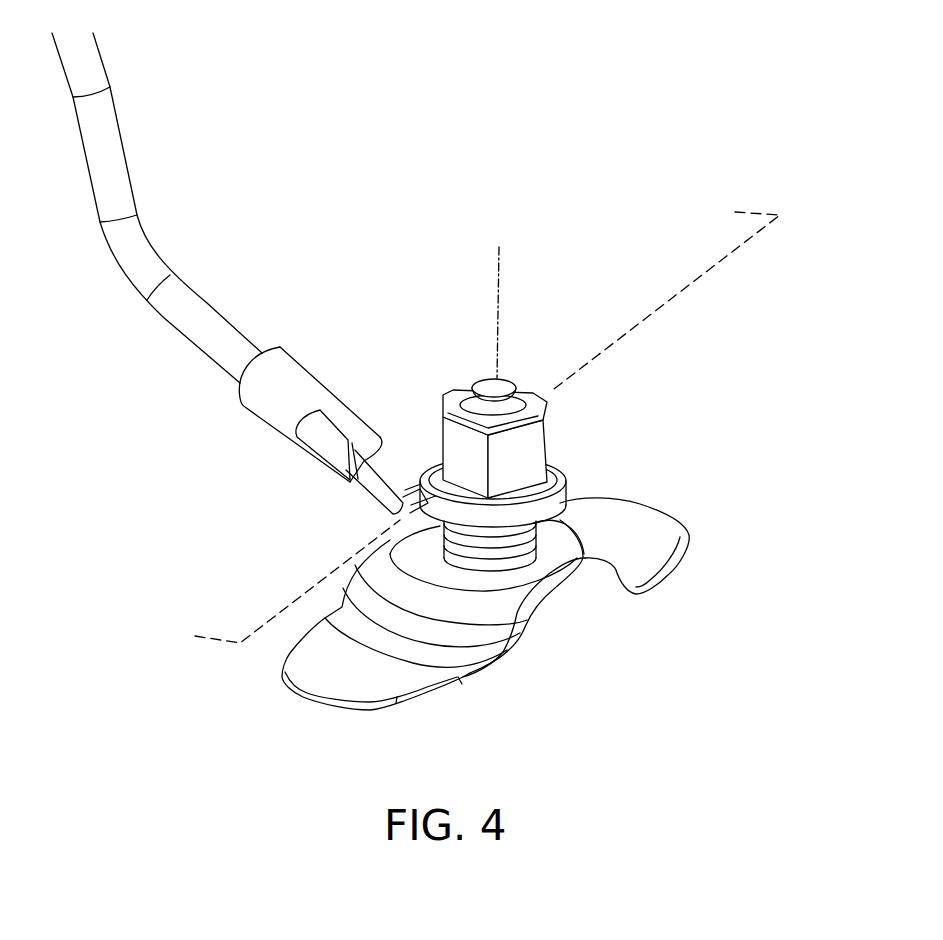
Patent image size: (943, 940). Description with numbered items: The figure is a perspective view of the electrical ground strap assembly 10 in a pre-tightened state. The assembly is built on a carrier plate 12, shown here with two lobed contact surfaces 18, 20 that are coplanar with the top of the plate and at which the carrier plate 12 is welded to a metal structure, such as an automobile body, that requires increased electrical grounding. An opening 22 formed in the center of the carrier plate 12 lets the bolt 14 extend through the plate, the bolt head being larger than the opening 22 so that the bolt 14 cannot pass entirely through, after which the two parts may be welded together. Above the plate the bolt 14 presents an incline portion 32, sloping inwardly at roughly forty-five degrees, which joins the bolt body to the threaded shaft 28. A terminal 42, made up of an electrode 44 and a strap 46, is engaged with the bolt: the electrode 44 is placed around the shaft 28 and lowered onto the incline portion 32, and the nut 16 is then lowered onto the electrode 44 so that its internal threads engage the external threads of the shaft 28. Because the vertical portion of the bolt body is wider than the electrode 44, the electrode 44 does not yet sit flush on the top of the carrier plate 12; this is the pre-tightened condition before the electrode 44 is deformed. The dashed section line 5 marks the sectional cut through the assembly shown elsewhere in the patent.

The section line 5- 5 is at (472, 421).
The electrical ground strap assembly 10 is at (258, 525).
The carrier plate 12 is at (517, 608).
The bolt 14 is at (498, 387).
The nut 16 is at (547, 410).
The contact surface 18 is at (313, 661).
The contact surface 20 is at (632, 515).
The opening 22 is at (537, 621).
The shaft 28 is at (472, 392).
The incline portion 32 is at (500, 565).
The terminal 42 is at (352, 388).
The electrode 44 is at (380, 538).
The strap 46 is at (178, 297).